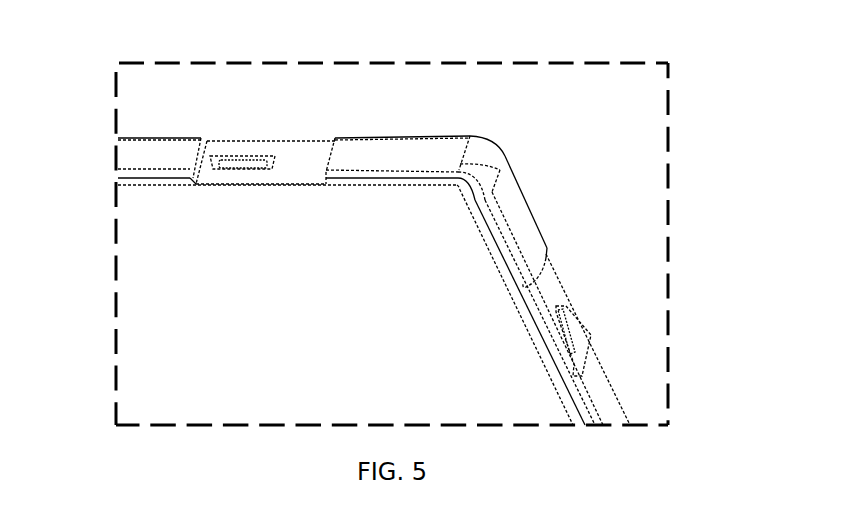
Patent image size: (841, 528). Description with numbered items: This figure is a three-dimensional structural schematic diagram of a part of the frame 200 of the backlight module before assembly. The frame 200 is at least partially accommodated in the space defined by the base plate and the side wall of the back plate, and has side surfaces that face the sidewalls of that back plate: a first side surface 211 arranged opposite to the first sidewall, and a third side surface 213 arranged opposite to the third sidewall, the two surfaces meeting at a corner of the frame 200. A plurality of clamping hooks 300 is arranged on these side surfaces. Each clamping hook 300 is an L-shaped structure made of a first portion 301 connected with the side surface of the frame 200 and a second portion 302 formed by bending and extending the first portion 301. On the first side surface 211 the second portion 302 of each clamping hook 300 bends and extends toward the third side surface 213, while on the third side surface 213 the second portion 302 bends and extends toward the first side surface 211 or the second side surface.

The frame 200 is at (163, 263).
The first side surface 211 is at (380, 155).
The third side surface 213 is at (609, 398).
The clamping hook 300 is at (570, 327).
The first portion 301 is at (222, 169).
The second portion 302 is at (257, 162).